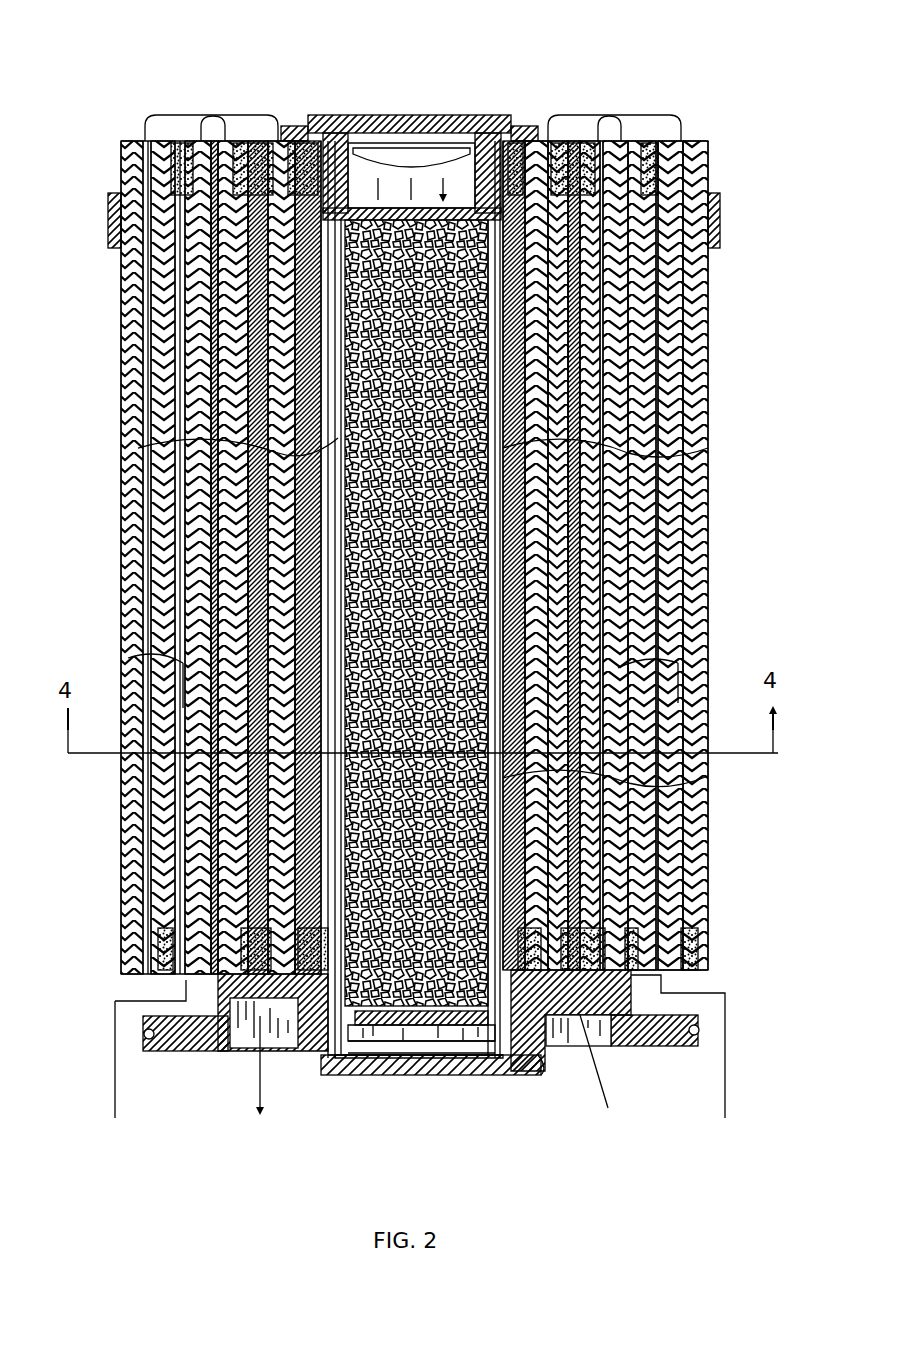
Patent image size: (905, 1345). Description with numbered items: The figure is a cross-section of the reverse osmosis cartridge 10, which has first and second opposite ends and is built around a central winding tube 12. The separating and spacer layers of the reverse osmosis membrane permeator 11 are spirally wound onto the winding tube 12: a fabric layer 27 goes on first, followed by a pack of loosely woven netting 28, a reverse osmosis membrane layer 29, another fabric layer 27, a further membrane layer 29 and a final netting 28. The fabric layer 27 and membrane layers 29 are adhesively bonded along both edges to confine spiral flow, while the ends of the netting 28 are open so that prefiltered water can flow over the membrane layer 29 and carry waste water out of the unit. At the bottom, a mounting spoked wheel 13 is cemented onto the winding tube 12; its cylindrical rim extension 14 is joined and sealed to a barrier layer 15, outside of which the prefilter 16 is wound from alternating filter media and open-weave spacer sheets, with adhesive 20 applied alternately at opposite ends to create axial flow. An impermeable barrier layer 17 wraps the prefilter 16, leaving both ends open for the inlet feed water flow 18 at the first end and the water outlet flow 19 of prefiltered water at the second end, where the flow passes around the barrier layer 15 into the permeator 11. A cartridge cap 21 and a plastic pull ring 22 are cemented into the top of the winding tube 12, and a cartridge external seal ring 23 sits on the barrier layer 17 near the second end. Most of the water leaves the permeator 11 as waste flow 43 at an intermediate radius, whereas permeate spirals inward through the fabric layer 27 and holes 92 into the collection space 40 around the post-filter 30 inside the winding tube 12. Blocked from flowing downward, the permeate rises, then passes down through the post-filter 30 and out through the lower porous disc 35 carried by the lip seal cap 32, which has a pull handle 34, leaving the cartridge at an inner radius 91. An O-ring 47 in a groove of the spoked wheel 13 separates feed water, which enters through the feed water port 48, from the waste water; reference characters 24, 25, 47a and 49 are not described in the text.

The reverse osmosis cartridge 10 is at (712, 362).
The reverse osmosis membrane permeator 11 is at (330, 790).
The winding tube 12 is at (240, 502).
The mounting spoked wheel 13 is at (585, 1047).
The cylindrical rim extension 14 is at (630, 972).
The barrier layer 15 is at (210, 452).
The prefilter 16 is at (175, 880).
The impermeable barrier layer 17 is at (122, 406).
The inlet feed water flow 18 is at (150, 972).
The water outlet flow 19 is at (165, 133).
The adhesive 20 is at (168, 140).
The cartridge cap 21 is at (480, 125).
The plastic pull ring 22 is at (560, 118).
The cartridge external seal ring 23 is at (100, 212).
The filter layer 24 is at (120, 775).
The flow passage 25 is at (122, 652).
The fabric layer 27 is at (255, 530).
The netting 28 is at (275, 580).
The reverse osmosis membrane layer 29 is at (300, 604).
The post-filter 30 is at (405, 107).
The lip seal cap 32 is at (438, 1035).
The pull handle 34 is at (475, 1050).
The porous disc 35 is at (470, 140).
The collection space 40 is at (330, 350).
The waste flow 43 is at (252, 1110).
The O-ring 47 is at (140, 1030).
The bottom block lip 47a is at (533, 1067).
The feed water port 48 is at (107, 1095).
The inlet tube 49 is at (222, 133).
The inner radius 91 is at (415, 1027).
The holes 92 is at (700, 442).